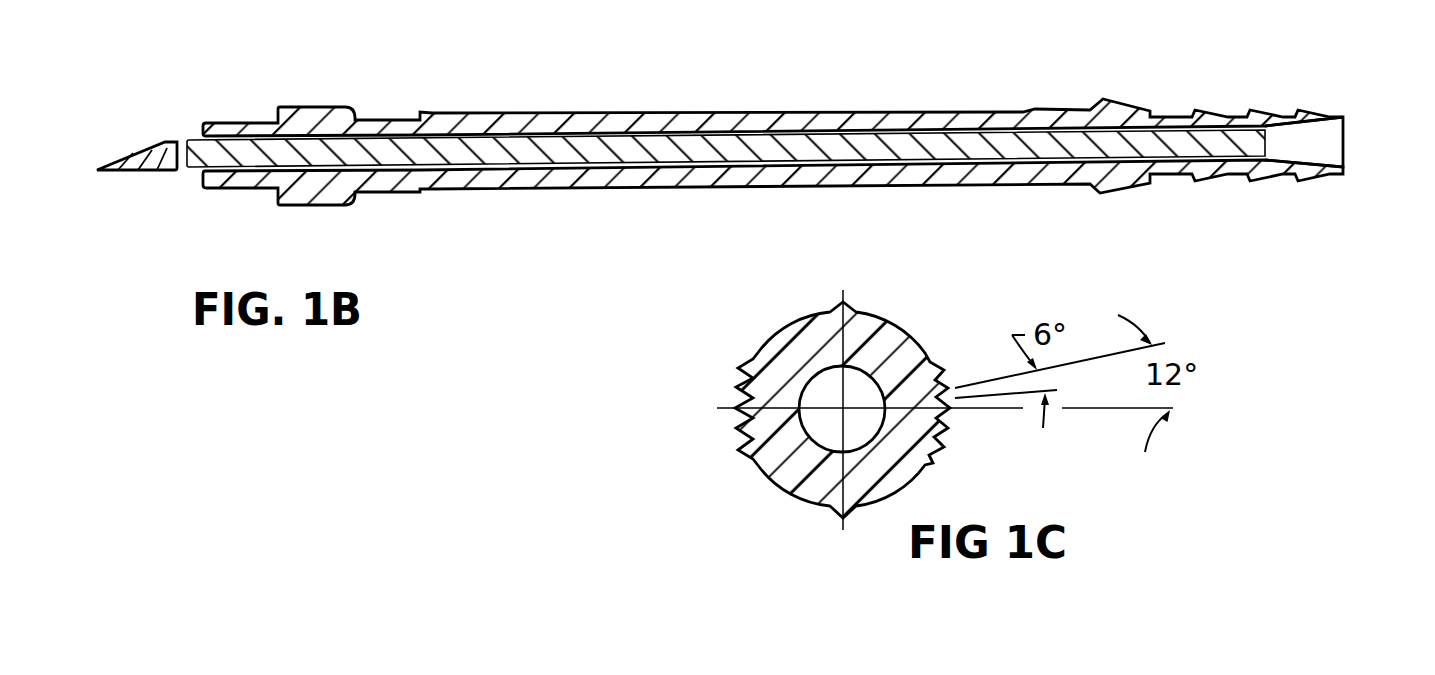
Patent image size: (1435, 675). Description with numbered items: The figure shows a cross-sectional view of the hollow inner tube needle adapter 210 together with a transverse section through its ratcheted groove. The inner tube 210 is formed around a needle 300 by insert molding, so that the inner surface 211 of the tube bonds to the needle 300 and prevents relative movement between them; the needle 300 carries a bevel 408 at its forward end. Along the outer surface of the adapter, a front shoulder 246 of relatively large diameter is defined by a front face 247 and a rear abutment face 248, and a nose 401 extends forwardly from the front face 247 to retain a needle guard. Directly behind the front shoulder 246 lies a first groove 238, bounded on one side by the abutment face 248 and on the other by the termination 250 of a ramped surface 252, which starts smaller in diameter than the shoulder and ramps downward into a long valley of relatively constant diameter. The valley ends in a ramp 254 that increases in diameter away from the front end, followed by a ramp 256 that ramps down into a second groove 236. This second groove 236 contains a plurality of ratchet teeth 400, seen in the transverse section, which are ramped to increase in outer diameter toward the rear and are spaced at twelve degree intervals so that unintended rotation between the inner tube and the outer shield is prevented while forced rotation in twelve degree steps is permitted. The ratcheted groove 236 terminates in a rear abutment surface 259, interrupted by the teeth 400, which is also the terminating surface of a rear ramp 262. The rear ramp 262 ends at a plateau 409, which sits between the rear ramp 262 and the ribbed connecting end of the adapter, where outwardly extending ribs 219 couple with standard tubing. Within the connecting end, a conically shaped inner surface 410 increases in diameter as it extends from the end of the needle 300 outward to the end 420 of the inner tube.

In FIG. 1B, the inner tube needle adapter 210 is at (768, 197).
In FIG. 1B, the inner surface 211 is at (577, 137).
In FIG. 1B, the ribs 219 is at (1307, 112).
In FIG. 1B, the second groove 236 is at (1080, 108).
In FIG. 1B, the first groove 238 is at (390, 118).
In FIG. 1B, the front shoulder 246 is at (317, 107).
In FIG. 1B, the front face 247 is at (278, 108).
In FIG. 1B, the rear abutment face 248 is at (380, 88).
In FIG. 1B, the termination of ramped surface 250 is at (422, 192).
In FIG. 1B, the ramped surface 252 is at (430, 192).
In FIG. 1B, the ramp 254 is at (1035, 108).
In FIG. 1B, the ramp 256 is at (1063, 108).
In FIG. 1B, the rear abutment surface 259 is at (1097, 188).
In FIG. 1B, the rear ramp 262 is at (1100, 103).
In FIG. 1B, the needle 300 is at (135, 172).
In FIG. 1C, the ratchet teeth 400 is at (745, 410).
In FIG. 1B, the nose 401 is at (235, 188).
In FIG. 1B, the bevel 408 is at (142, 153).
In FIG. 1B, the plateau 409 is at (1140, 184).
In FIG. 1B, the conically shaped inner surface 410 is at (1345, 130).
In FIG. 1B, the end of the inner tube 420 is at (1345, 162).